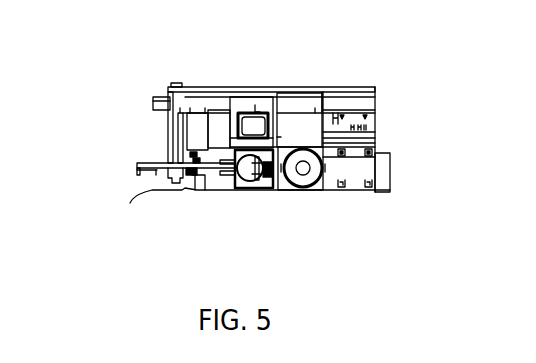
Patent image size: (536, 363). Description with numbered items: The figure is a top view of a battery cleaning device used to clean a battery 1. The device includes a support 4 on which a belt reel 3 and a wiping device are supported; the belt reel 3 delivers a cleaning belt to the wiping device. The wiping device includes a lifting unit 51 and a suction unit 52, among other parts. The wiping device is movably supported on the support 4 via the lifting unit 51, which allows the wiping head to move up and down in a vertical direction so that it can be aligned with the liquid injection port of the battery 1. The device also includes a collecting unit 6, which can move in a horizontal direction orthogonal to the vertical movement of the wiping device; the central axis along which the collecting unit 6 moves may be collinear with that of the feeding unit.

The battery 1 is at (197, 192).
The belt reel 3 is at (137, 173).
The support 4 is at (212, 90).
The lifting unit 51 is at (255, 112).
The suction unit 52 is at (265, 180).
The collecting unit 6 is at (308, 168).